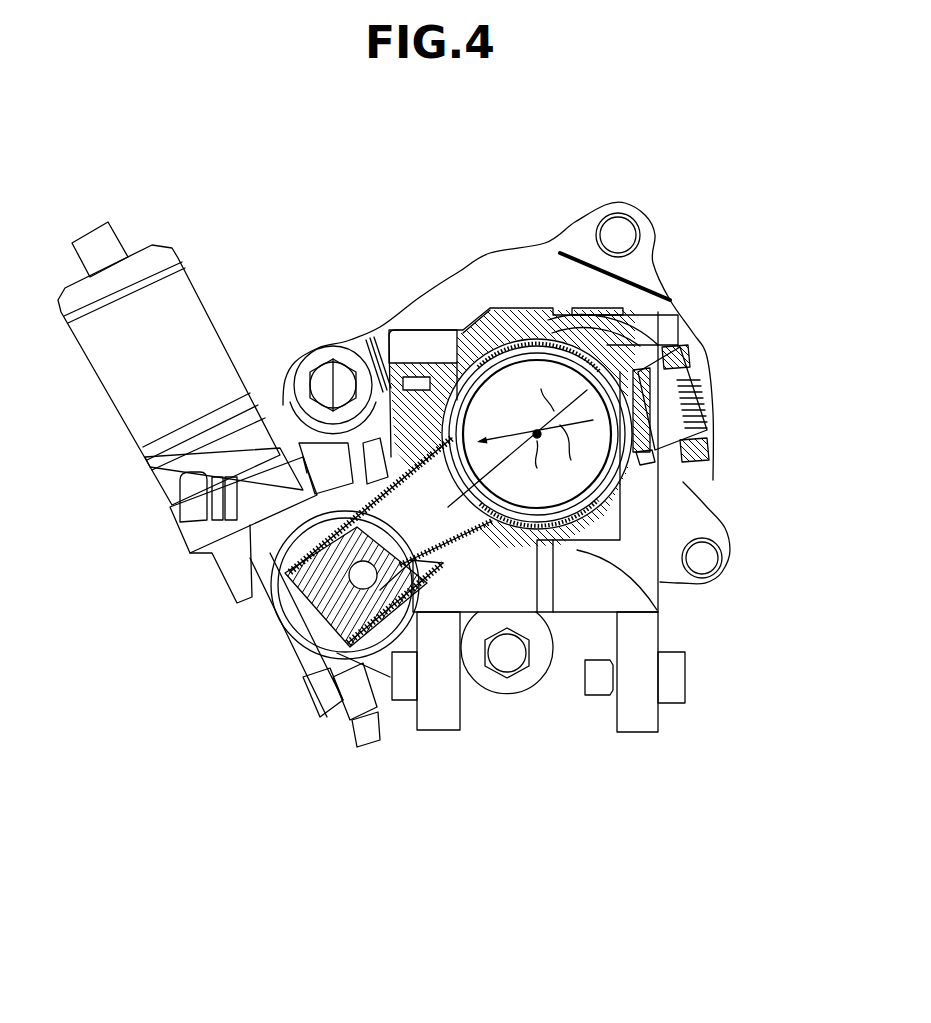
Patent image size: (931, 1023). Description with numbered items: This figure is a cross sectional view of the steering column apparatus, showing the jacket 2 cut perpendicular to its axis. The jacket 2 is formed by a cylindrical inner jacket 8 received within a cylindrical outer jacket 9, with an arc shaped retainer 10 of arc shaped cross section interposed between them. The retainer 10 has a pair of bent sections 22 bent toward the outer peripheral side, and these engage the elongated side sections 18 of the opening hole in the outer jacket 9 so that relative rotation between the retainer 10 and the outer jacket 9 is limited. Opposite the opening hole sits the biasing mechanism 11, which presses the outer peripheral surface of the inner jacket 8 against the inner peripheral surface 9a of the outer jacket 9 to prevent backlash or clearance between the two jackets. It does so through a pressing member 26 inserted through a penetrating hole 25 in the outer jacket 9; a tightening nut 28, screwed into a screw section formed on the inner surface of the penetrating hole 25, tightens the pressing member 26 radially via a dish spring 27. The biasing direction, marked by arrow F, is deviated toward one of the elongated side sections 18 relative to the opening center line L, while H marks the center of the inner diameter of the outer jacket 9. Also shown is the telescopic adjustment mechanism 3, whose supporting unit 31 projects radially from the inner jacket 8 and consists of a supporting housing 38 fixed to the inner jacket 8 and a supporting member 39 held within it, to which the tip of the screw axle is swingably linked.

The jacket 2 is at (487, 173).
The telescopic adjustment mechanism 3 is at (141, 587).
The inner jacket 8 is at (474, 335).
The outer jacket 9 is at (499, 328).
The inner peripheral surface 9a is at (468, 348).
The retainer 10 is at (531, 342).
The biasing mechanism 11 is at (720, 436).
The elongated side sections 18 is at (332, 346).
The bent sections 22 is at (384, 388).
The penetrating hole 25 is at (650, 447).
The pressing member 26 is at (667, 363).
The dish spring 27 is at (700, 437).
The tightening nut 28 is at (698, 391).
The supporting unit 31 is at (365, 755).
The supporting housing 38 is at (383, 702).
The supporting member 39 is at (347, 730).